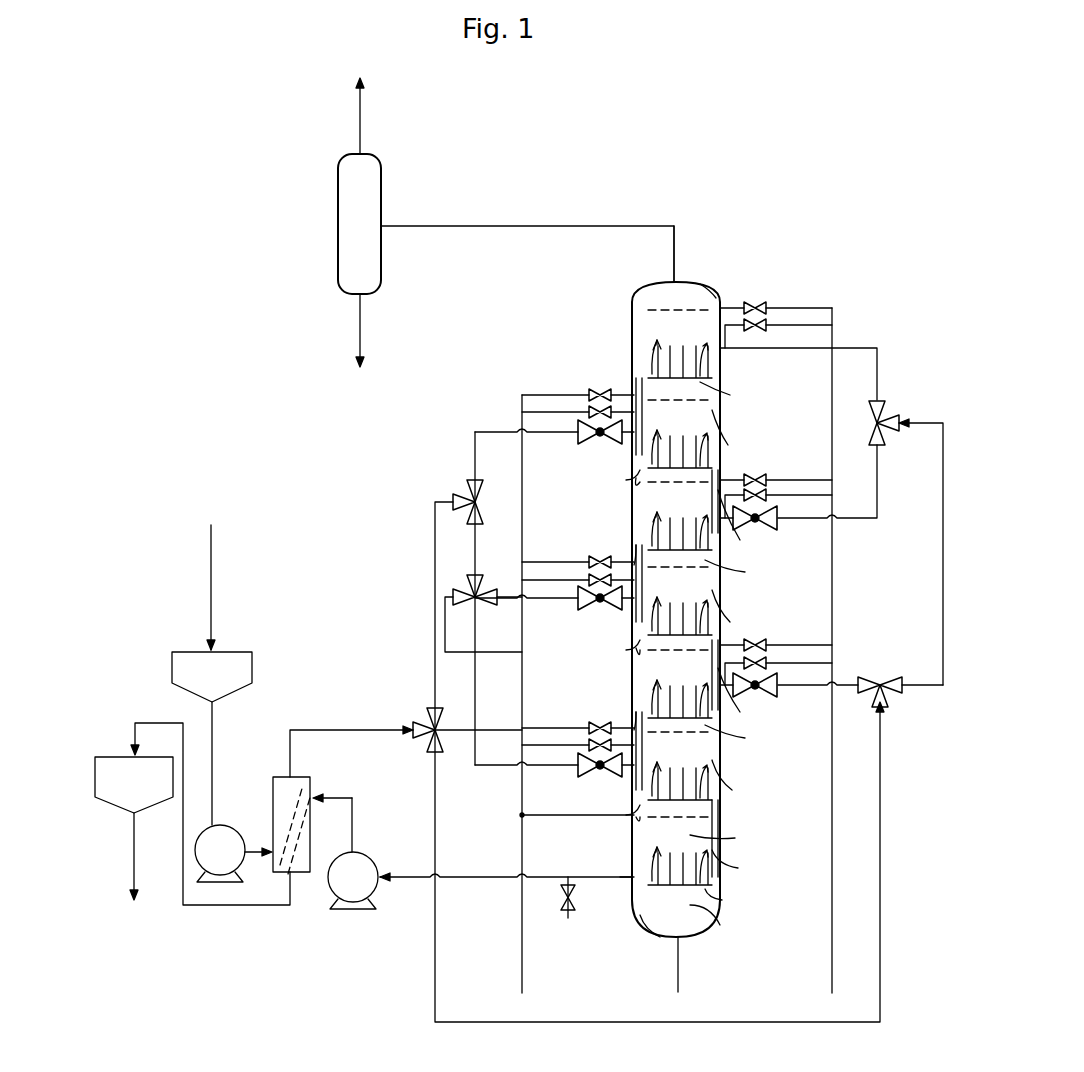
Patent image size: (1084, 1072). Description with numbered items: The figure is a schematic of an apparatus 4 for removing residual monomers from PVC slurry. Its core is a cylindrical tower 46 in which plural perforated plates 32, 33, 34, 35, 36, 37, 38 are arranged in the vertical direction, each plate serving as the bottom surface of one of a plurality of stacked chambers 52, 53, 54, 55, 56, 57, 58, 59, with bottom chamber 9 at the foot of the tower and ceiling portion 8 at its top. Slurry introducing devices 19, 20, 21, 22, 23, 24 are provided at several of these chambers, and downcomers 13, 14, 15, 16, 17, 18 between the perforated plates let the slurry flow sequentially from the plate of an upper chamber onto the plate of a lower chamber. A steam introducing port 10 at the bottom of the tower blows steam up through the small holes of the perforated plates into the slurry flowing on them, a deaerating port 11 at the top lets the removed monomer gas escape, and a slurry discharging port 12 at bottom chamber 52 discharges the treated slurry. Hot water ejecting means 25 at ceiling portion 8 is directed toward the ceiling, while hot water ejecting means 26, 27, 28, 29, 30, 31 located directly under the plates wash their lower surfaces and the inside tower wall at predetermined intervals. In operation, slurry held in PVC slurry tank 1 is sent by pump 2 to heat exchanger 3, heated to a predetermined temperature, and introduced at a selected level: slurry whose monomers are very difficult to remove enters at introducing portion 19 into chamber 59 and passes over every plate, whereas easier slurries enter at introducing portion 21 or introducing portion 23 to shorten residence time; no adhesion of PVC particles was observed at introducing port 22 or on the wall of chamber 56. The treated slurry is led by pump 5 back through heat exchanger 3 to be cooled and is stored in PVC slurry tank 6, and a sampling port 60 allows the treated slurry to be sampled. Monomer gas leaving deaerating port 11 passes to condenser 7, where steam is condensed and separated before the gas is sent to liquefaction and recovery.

The PVC slurry tank 1 is at (240, 650).
The pump 2 is at (230, 826).
The heat exchanger 3 is at (312, 785).
The apparatus for removing residual monomers 4 is at (684, 596).
The pump 5 is at (368, 856).
The PVC slurry tank 6 is at (118, 752).
The condenser 7 is at (383, 165).
The ceiling portion 8 is at (638, 300).
The bottom chamber 9 is at (650, 940).
The steam introducing port 10 is at (680, 940).
The deaerating port 11 is at (672, 280).
The slurry discharging port 12 is at (630, 880).
The downcomer 13 is at (620, 465).
The downcomer 14 is at (743, 530).
The downcomer 15 is at (620, 633).
The downcomer 16 is at (746, 703).
The downcomer 17 is at (620, 800).
The downcomer 18 is at (743, 863).
The slurry introducing portion 19 is at (760, 362).
The slurry introducing device 20 is at (592, 448).
The slurry introducing portion 21 is at (768, 535).
The introducing port 22 is at (592, 613).
The slurry introducing portion 23 is at (765, 700).
The slurry introducing device 24 is at (592, 781).
The hot water ejecting means 25 is at (645, 312).
The hot water ejecting means 26 is at (700, 405).
The hot water ejecting means 27 is at (650, 490).
The hot water ejecting means 28 is at (700, 580).
The hot water ejecting means 29 is at (655, 658).
The hot water ejecting means 30 is at (690, 748).
The hot water ejecting means 31 is at (650, 832).
The perforated plate 32 is at (730, 395).
The perforated plate 33 is at (640, 482).
The perforated plate 34 is at (745, 572).
The perforated plate 35 is at (640, 652).
The perforated plate 36 is at (745, 738).
The perforated plate 37 is at (640, 818).
The perforated plate 38 is at (722, 900).
The cylindrical tower 46 is at (596, 392).
The bottom chamber 52 is at (722, 922).
The heat exchanger 53 is at (732, 836).
The heat exchanger 54 is at (743, 787).
The heat exchanger 55 is at (615, 713).
The chamber 56 is at (740, 618).
The heat exchanger 57 is at (615, 547).
The heat exchanger 58 is at (740, 438).
The chamber 59 is at (706, 294).
The sampling port 60 is at (565, 922).